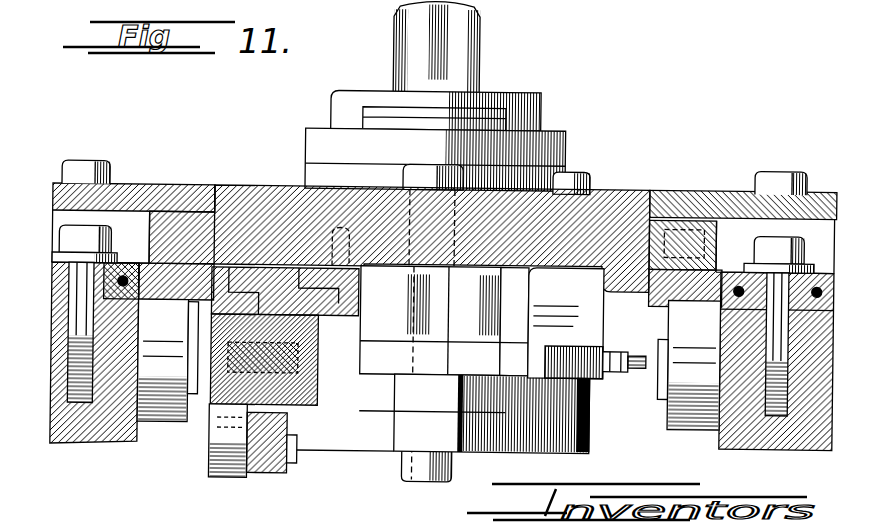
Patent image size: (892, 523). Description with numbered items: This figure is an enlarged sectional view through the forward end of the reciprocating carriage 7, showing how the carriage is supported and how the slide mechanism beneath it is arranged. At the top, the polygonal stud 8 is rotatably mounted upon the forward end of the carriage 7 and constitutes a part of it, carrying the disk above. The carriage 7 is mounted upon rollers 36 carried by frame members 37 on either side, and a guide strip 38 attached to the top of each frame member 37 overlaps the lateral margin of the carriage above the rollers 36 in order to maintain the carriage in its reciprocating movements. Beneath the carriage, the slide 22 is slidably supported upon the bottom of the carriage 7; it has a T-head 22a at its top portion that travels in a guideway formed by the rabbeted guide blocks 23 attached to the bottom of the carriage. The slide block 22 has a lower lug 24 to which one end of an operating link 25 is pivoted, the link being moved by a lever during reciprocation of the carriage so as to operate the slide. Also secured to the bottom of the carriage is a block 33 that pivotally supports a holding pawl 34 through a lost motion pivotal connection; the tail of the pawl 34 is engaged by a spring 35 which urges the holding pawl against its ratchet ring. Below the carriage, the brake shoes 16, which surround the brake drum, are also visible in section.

The reciprocating carriage 7 is at (606, 205).
The polygonal stud 8 is at (462, 49).
The brake shoes 16 is at (512, 422).
The slide 22 is at (312, 392).
The T-head 22a is at (284, 270).
The rabbeted guide blocks 23 is at (212, 310).
The lower lug 24 is at (247, 480).
The operating link 25 is at (278, 468).
The block 33 is at (589, 316).
The holding pawl 34 is at (611, 368).
The spring 35 is at (598, 402).
The rollers 36 is at (160, 425).
The frame members 37 is at (88, 430).
The guide strip 38 is at (137, 190).